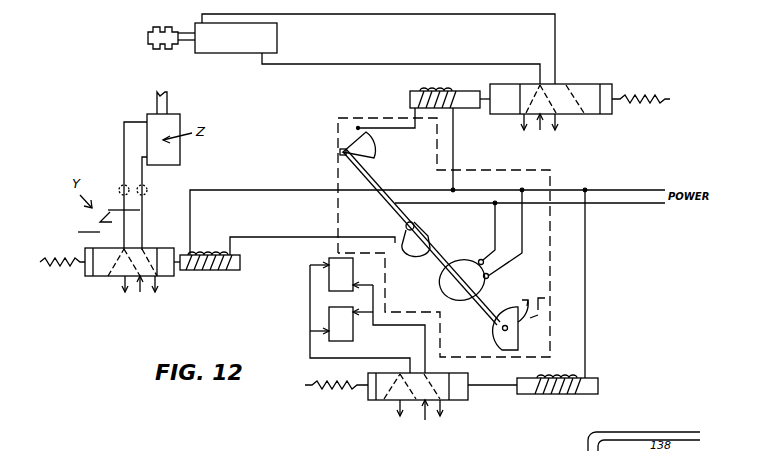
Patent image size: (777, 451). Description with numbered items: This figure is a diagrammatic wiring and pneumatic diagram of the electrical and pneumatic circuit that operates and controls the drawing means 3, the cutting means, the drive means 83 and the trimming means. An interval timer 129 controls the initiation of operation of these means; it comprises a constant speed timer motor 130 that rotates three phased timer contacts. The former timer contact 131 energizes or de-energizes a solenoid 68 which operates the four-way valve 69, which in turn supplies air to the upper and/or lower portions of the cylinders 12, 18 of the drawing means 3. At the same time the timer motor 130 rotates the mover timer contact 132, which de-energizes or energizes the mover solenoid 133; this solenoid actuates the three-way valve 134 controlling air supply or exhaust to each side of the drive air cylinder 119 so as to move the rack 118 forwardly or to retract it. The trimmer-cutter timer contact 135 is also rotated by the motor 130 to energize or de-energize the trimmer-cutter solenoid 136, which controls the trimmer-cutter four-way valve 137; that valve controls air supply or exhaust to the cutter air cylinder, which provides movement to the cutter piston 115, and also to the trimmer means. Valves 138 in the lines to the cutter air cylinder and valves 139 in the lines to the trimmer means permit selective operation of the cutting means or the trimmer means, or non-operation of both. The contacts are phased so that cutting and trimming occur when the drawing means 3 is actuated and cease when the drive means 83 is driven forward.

The rack 118 is at (148, 37).
The drive means 83 is at (152, 52).
The drive air cylinder 119 is at (231, 40).
The cutter piston 115 is at (167, 102).
The valves 138 is at (140, 188).
The valves 139 is at (108, 212).
The trimmer-cutter four-way valve 137 is at (100, 278).
The trimmer-cutter solenoid 136 is at (208, 271).
The mover timer contact 132 is at (377, 143).
The mover solenoid 133 is at (468, 108).
The three-way valve 134 is at (582, 90).
The trimmer-cutter timer contact 135 is at (426, 236).
The constant speed timer motor 130 is at (462, 262).
The former timer contact 131 is at (520, 310).
The interval timer 129 is at (553, 295).
The cylinder 12 is at (341, 274).
The cylinder 18 is at (308, 318).
The drawing means 3 is at (353, 315).
The four-way valve 69 is at (386, 396).
The solenoid 68 is at (557, 394).